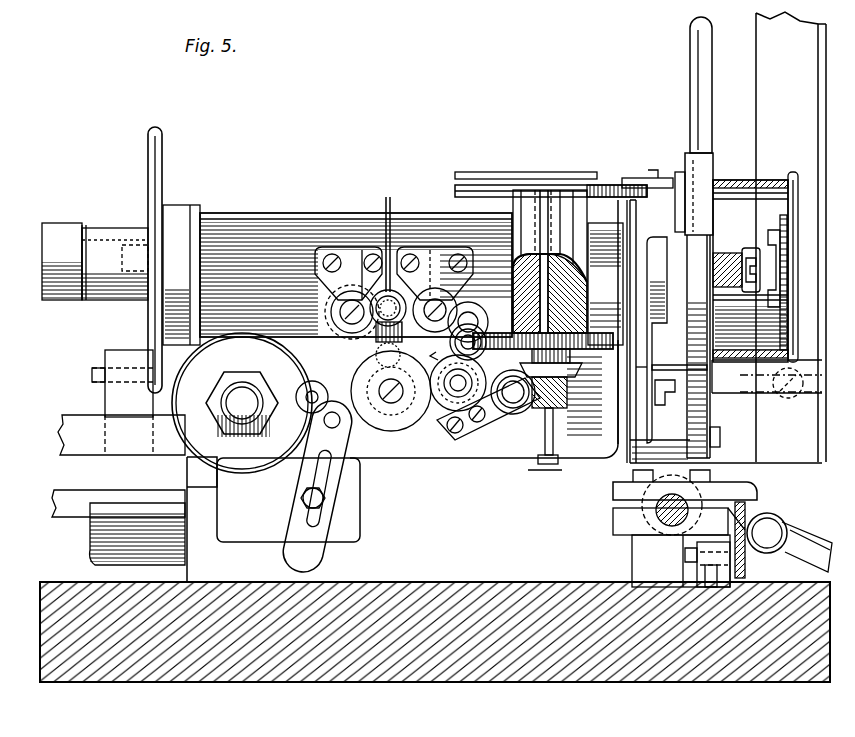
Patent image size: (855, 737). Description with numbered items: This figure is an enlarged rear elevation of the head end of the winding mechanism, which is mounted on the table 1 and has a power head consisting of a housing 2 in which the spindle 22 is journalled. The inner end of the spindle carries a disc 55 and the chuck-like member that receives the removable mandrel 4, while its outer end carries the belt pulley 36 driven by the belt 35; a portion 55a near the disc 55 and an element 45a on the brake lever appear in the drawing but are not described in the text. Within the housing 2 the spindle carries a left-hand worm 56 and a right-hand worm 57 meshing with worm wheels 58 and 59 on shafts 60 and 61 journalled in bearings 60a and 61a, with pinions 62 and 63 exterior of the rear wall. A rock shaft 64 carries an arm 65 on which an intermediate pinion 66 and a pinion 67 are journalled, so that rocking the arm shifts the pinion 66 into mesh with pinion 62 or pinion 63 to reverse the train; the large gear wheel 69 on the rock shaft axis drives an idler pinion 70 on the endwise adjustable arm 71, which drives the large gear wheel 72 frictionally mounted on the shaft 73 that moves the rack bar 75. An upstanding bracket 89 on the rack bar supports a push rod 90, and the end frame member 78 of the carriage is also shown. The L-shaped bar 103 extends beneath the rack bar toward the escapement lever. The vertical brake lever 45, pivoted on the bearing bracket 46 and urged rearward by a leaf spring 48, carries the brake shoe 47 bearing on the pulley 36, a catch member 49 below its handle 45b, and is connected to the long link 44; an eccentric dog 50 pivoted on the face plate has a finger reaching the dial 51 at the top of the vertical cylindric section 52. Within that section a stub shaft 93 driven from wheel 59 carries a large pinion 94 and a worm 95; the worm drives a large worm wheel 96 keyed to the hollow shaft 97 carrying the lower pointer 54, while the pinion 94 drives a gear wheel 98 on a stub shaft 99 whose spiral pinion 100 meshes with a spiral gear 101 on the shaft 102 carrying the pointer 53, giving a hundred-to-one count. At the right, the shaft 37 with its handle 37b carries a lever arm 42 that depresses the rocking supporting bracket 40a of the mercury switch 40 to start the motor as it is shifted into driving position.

The table 1 is at (241, 650).
The housing 2 is at (266, 218).
The mandrel 4 is at (75, 290).
The spindle 22 is at (183, 248).
The belt 35 is at (760, 180).
The belt pulley 36 is at (794, 176).
The shaft 37 is at (660, 515).
The handle 37b is at (815, 552).
The mercury switch 40 is at (786, 528).
The rocking supporting bracket 40a is at (748, 510).
The lever arm 42 is at (733, 492).
The long link 44 is at (734, 258).
The brake lever 45 is at (690, 338).
The lug 45a is at (722, 435).
The handle 45b is at (695, 40).
The bearing bracket 46 is at (636, 352).
The brake shoe 47 is at (748, 250).
The leaf spring 48 is at (710, 408).
The catch member 49 is at (688, 212).
The eccentric dog 50 is at (647, 178).
The dial 51 is at (485, 193).
The vertical cylindric section 52 is at (588, 312).
The pointer 53 is at (478, 172).
The lower pointer 54 is at (605, 184).
The disc 55 is at (152, 142).
The shaft 55a is at (106, 238).
The worm 56 is at (366, 248).
The worm 57 is at (433, 248).
The worm wheel 58 is at (328, 325).
The worm wheel 59 is at (482, 312).
The shaft 60 is at (344, 322).
The bearing 60a is at (328, 250).
The shaft 61 is at (406, 370).
The bearing 61a is at (398, 196).
The pinion 62 is at (330, 310).
The pinion 63 is at (440, 300).
The rock shaft 64 is at (445, 405).
The arm 65 is at (372, 324).
The intermediate pinion 66 is at (336, 254).
The pinion 67 is at (322, 392).
The large gear wheel 69 is at (458, 380).
The idler pinion 70 is at (393, 420).
The endwise adjustable arm 71 is at (338, 480).
The large gear wheel 72 is at (200, 410).
The shaft 73 is at (241, 400).
The rack bar 75 is at (97, 440).
The end frame member 78 is at (791, 237).
The upstanding bracket 89 is at (112, 403).
The push rod 90 is at (98, 368).
The stub shaft 93 is at (458, 392).
The large pinion 94 is at (478, 320).
The worm 95 is at (439, 358).
The large worm wheel 96 is at (572, 372).
The hollow shaft 97 is at (560, 190).
The gear wheel 98 is at (514, 414).
The stub shaft 99 is at (493, 422).
The spiral pinion 100 is at (480, 354).
The spiral gear 101 is at (566, 400).
The shaft 102 is at (548, 190).
The L-shaped bar 103 is at (78, 500).